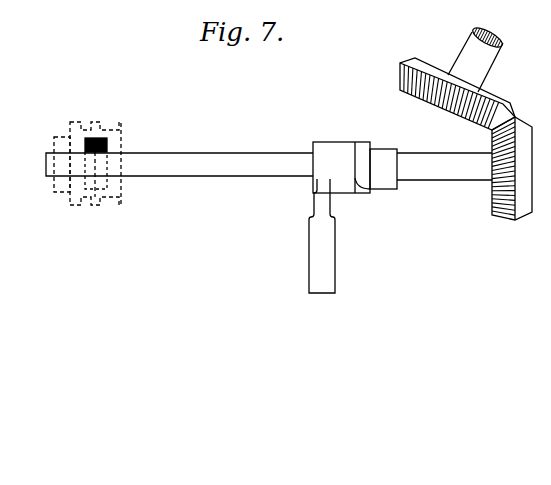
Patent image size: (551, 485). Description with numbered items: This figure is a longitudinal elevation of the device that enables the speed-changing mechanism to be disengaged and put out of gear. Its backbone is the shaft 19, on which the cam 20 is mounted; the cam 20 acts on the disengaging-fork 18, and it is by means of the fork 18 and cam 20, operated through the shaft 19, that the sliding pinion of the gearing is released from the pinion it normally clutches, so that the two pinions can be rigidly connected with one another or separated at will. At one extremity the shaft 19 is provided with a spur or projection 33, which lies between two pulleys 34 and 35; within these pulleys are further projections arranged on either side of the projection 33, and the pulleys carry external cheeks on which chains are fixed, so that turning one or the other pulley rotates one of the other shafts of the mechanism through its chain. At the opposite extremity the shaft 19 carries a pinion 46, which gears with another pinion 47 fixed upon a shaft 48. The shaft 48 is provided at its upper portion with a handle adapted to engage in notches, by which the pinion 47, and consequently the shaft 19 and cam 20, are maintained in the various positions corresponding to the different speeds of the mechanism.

The disengaging-fork 18 is at (339, 217).
The shaft 19 is at (444, 166).
The cam 20 is at (383, 169).
The spur or projection 33 is at (96, 163).
The pulley 34 is at (106, 166).
The pulley 35 is at (72, 180).
The pinion 46 is at (514, 168).
The pinion 47 is at (457, 94).
The shaft 48 is at (479, 57).